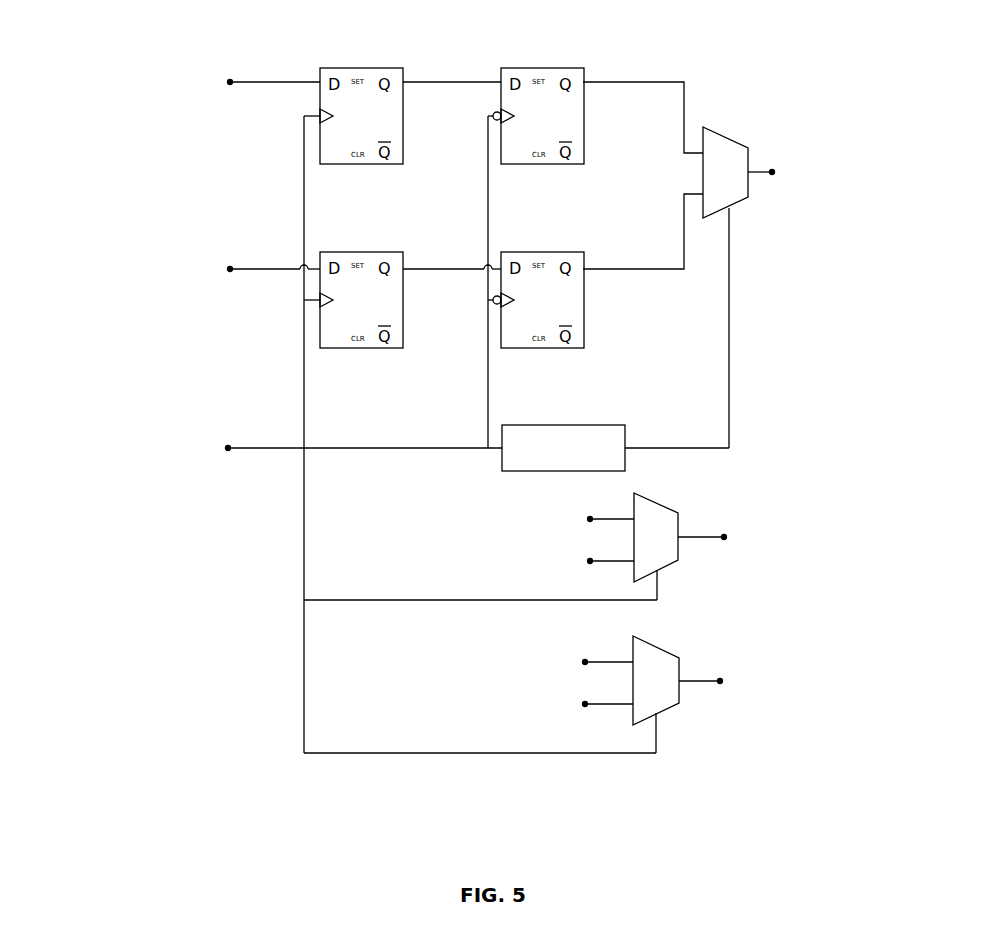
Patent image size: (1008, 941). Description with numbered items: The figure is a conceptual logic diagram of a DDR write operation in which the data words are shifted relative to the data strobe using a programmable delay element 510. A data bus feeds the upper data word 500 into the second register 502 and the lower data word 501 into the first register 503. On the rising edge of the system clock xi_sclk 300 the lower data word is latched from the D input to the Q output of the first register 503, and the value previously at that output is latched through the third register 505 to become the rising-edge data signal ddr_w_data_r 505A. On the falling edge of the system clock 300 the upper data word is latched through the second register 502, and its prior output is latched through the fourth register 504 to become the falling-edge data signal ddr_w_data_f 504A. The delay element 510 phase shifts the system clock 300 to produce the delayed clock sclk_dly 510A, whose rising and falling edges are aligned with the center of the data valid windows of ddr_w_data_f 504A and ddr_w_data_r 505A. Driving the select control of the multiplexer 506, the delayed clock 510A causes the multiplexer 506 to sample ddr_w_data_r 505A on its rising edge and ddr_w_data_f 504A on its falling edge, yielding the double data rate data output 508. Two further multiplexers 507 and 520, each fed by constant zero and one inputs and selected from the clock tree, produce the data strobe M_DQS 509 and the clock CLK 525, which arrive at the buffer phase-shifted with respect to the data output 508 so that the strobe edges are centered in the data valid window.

The xi_sclk 300 is at (165, 437).
The xi_b2d_data[31:16] 500 is at (76, 65).
The xi_b2d_data[15:0] 501 is at (76, 254).
The register 2 502 is at (346, 66).
The register 1 503 is at (346, 250).
The register 4 504 is at (559, 66).
The ddr_w_data_f 504A is at (650, 63).
The register 3 505 is at (561, 250).
The ddr_w_data_r 505A is at (688, 274).
The multiplexer 506 is at (719, 135).
The multiplexer 507 is at (671, 508).
The BM_DO[15:0] 508 is at (851, 166).
The M_DQS 509 is at (777, 525).
The delay element 510 is at (609, 425).
The sclk_dly 510A is at (754, 372).
The multiplexer 520 is at (664, 652).
The CLK 525 is at (755, 674).